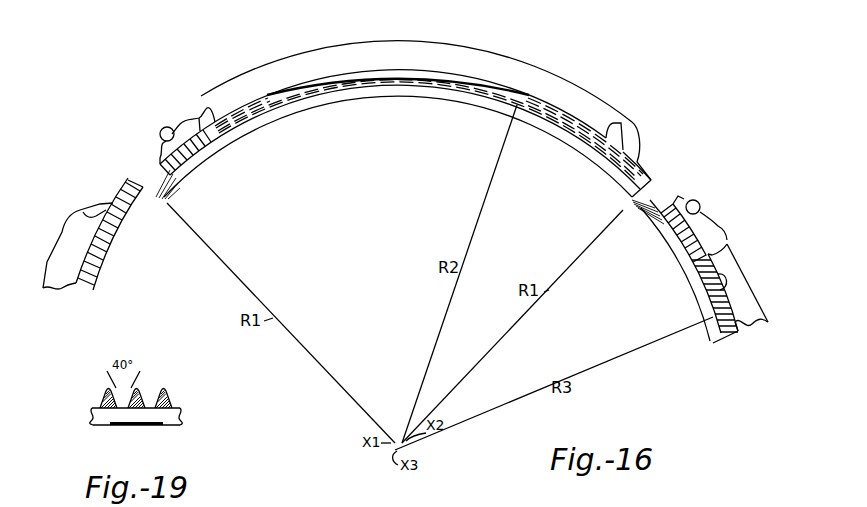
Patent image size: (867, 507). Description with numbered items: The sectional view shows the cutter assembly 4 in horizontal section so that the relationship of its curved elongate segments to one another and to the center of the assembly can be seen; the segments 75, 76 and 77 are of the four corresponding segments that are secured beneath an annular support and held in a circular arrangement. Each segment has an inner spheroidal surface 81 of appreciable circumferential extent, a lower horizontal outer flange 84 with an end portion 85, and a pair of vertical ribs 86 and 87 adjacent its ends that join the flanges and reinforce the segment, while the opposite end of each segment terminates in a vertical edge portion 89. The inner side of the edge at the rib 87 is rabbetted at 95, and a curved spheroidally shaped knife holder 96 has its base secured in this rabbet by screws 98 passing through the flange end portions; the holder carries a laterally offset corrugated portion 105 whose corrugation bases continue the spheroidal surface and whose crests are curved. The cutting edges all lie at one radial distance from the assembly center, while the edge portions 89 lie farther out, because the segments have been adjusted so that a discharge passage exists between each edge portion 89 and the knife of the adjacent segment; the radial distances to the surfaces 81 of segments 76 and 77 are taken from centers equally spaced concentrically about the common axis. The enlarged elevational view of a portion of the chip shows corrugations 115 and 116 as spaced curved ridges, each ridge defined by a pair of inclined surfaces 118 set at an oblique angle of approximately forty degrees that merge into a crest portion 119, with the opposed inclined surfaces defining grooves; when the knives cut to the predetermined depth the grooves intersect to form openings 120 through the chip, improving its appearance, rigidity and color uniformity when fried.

In FIG. 16, the cutter assembly 4 is at (228, 80).
In FIG. 16, the segment 75 is at (92, 240).
In FIG. 16, the segment 76 is at (463, 85).
In FIG. 16, the segment 77 is at (743, 334).
In FIG. 16, the inner spheroidal surface 81 is at (95, 290).
In FIG. 16, the lower horizontal outer flange 84 is at (60, 284).
In FIG. 16, the end portion 85 is at (162, 150).
In FIG. 16, the vertical rib 86 is at (84, 214).
In FIG. 16, the vertical rib 87 is at (205, 115).
In FIG. 16, the vertical edge portion 89 is at (142, 184).
In FIG. 16, the rabbet 95 is at (226, 141).
In FIG. 16, the knife holder 96 is at (190, 167).
In FIG. 16, the screws 98 is at (160, 132).
In FIG. 16, the corrugated portion 105 is at (166, 197).
In FIG. 19, the corrugation 115 is at (101, 396).
In FIG. 19, the corrugation 116 is at (95, 421).
In FIG. 19, the inclined surfaces 118 is at (157, 394).
In FIG. 19, the crest portion 119 is at (170, 390).
In FIG. 19, the openings 120 is at (150, 425).